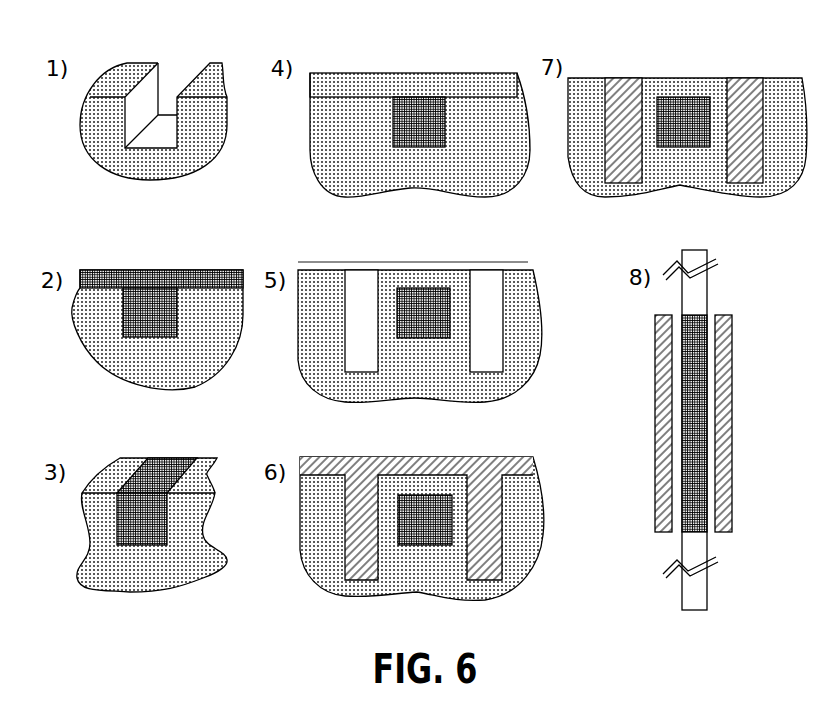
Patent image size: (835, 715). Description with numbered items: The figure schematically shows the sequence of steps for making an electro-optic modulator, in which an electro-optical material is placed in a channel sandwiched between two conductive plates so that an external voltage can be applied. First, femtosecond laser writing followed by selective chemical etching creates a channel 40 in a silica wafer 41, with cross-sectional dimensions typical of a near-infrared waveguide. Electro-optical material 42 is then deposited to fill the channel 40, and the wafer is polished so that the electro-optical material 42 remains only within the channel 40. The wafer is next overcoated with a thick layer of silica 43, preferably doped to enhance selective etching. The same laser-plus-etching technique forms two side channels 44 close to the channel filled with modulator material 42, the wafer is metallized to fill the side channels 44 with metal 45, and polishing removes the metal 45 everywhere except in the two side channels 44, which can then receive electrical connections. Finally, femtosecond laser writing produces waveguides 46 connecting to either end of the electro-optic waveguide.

The channel 40 is at (182, 67).
The silica wafer 41 is at (92, 132).
The electro-optical material 42 is at (420, 100).
The layer of silica 43 is at (360, 82).
The side channels 44 is at (368, 282).
The metal 45 is at (483, 485).
The waveguides 46 is at (693, 590).